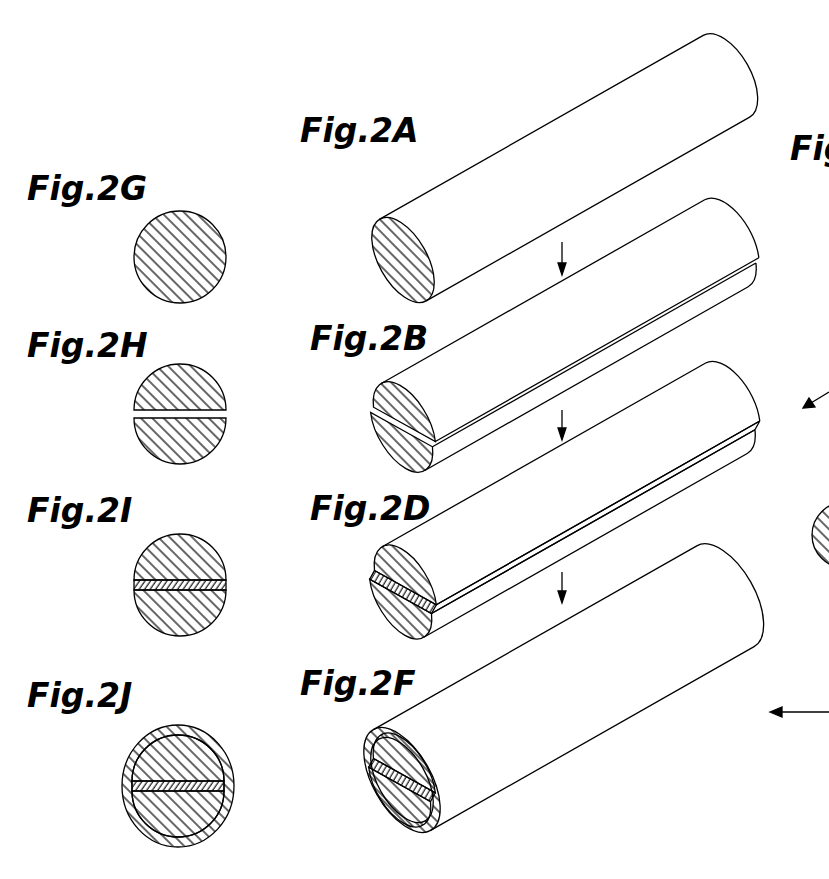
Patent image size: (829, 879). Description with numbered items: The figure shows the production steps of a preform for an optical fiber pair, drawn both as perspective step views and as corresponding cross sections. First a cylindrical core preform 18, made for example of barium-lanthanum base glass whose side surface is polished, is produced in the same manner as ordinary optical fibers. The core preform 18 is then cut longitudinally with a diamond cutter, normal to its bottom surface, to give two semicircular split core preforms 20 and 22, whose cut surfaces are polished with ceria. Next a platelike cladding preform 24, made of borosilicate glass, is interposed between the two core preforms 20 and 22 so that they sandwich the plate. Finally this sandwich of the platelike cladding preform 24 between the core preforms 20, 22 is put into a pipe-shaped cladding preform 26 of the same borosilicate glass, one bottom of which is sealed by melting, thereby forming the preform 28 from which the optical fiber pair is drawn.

In FIG. 2A, the core preform 18 is at (480, 167).
In FIG. 2G, the core preform 18 is at (222, 235).
In FIG. 2B, the split core preform 20 is at (638, 247).
In FIG. 2D, the split core preform 20 is at (732, 407).
In FIG. 2F, the split core preform 20 is at (405, 745).
In FIG. 2H, the split core preform 20 is at (217, 380).
In FIG. 2I, the split core preform 20 is at (215, 548).
In FIG. 2J, the split core preform 20 is at (197, 753).
In FIG. 2B, the split core preform 22 is at (717, 297).
In FIG. 2D, the split core preform 22 is at (723, 460).
In FIG. 2F, the split core preform 22 is at (395, 805).
In FIG. 2H, the split core preform 22 is at (223, 428).
In FIG. 2I, the split core preform 22 is at (222, 613).
In FIG. 2J, the split core preform 22 is at (208, 810).
In FIG. 2D, the platelike cladding preform 24 is at (747, 432).
In FIG. 2F, the platelike cladding preform 24 is at (445, 795).
In FIG. 2I, the platelike cladding preform 24 is at (225, 585).
In FIG. 2J, the platelike cladding preform 24 is at (227, 788).
In FIG. 2F, the cladding preform 26 is at (637, 697).
In FIG. 2J, the cladding preform 26 is at (128, 808).
In FIG. 2F, the preform for production of optical fiber pair 28 is at (563, 700).